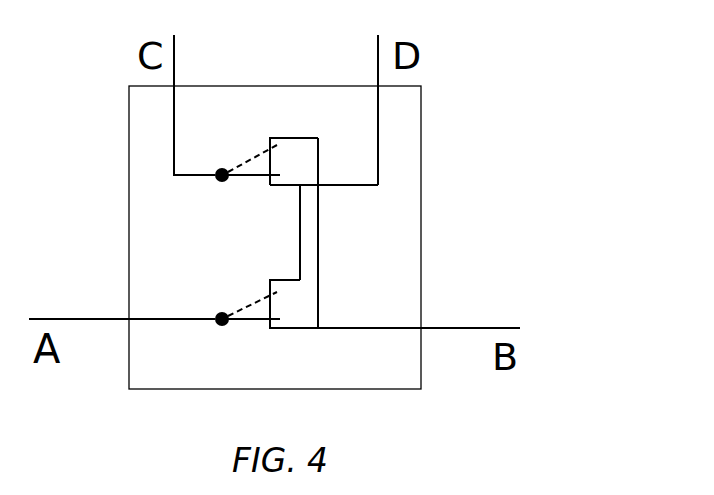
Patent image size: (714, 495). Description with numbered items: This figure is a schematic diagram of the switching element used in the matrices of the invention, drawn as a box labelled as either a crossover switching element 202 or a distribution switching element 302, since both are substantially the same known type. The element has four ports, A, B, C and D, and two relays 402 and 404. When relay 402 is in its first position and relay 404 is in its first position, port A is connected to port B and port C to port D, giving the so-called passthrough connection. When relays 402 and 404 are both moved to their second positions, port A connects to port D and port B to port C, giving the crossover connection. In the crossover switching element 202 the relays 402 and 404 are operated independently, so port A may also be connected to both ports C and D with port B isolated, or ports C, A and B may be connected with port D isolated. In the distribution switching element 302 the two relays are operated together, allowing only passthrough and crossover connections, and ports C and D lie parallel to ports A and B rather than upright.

The crossover switching element 202 is at (355, 375).
The distribution switching element 302 is at (275, 237).
The relay 402 is at (222, 319).
The relay 404 is at (222, 175).